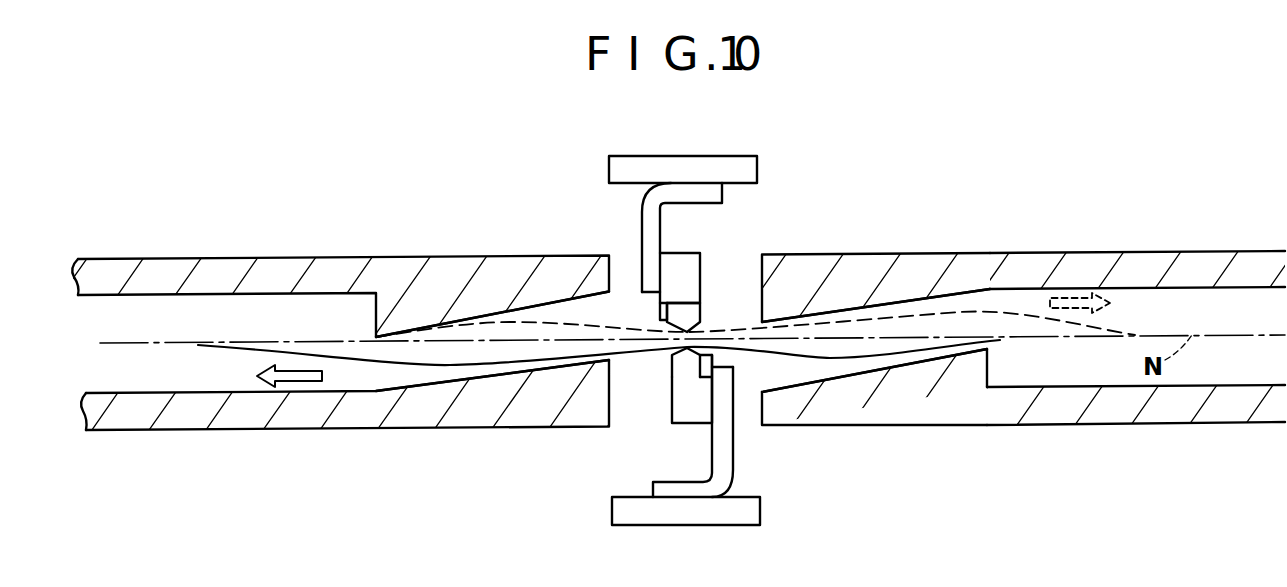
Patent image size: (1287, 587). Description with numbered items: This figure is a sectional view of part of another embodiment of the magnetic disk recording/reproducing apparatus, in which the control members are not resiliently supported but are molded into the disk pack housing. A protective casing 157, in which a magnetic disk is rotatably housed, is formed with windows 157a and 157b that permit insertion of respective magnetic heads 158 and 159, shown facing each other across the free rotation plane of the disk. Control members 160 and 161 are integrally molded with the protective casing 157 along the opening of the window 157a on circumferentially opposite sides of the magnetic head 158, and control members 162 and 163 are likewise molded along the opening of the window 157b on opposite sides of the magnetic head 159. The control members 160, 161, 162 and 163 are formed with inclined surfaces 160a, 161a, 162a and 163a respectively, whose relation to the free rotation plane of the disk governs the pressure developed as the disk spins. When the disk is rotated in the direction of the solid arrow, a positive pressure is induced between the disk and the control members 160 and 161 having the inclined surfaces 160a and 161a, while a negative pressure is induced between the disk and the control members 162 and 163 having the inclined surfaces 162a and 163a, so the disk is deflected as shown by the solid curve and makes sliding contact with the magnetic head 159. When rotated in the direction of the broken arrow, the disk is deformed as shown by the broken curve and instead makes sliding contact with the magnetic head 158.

The protective casing 157 is at (1097, 260).
The window 157a is at (623, 267).
The window 157b is at (745, 418).
The magnetic head 158 is at (705, 297).
The magnetic head 159 is at (663, 373).
The control member 160 is at (428, 275).
The inclined surface 160a is at (524, 320).
The control member 161 is at (800, 265).
The inclined surface 161a is at (924, 300).
The control member 162 is at (537, 418).
The inclined surface 162a is at (435, 378).
The control member 163 is at (963, 402).
The inclined surface 163a is at (848, 373).